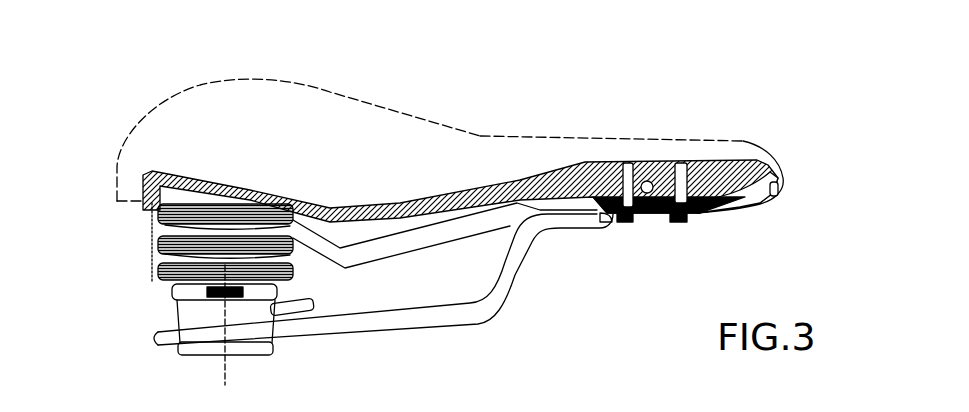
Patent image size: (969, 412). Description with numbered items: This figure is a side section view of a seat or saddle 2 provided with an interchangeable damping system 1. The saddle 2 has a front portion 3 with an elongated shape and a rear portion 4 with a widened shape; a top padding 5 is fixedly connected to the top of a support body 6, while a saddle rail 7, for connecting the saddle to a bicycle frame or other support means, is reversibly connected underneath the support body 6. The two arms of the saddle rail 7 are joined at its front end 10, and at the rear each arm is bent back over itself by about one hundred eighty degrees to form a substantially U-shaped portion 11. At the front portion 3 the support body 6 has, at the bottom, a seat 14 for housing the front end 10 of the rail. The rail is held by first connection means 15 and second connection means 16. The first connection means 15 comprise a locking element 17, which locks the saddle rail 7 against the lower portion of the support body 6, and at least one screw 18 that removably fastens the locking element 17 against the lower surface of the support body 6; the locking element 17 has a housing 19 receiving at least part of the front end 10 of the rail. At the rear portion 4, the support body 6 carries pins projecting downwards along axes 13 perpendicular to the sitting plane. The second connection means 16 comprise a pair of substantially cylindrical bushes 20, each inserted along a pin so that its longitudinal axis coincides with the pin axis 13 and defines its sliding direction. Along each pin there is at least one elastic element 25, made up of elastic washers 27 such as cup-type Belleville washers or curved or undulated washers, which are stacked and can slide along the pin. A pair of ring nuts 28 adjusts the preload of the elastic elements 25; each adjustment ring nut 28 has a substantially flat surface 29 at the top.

The interchangeable damping system 1 is at (423, 205).
The seat or saddle 2 is at (483, 202).
The front portion 3 is at (674, 108).
The rear portion 4 is at (163, 82).
The top padding 5 is at (338, 90).
The support body 6 is at (784, 188).
The saddle rail 7 is at (428, 335).
The front end 10 is at (615, 163).
The U-shaped portion 11 is at (163, 343).
The axis 13 is at (182, 337).
The seat 14 is at (647, 157).
The first connection means 15 is at (625, 256).
The second connection means 16 is at (130, 348).
The locking element 17 is at (611, 221).
The screw 18 is at (680, 224).
The housing 19 is at (600, 177).
The bush 20 is at (246, 356).
The elastic element 25 is at (152, 237).
The elastic washer 27 is at (293, 270).
The ring nut 28 is at (172, 302).
The flat surface 29 is at (168, 283).